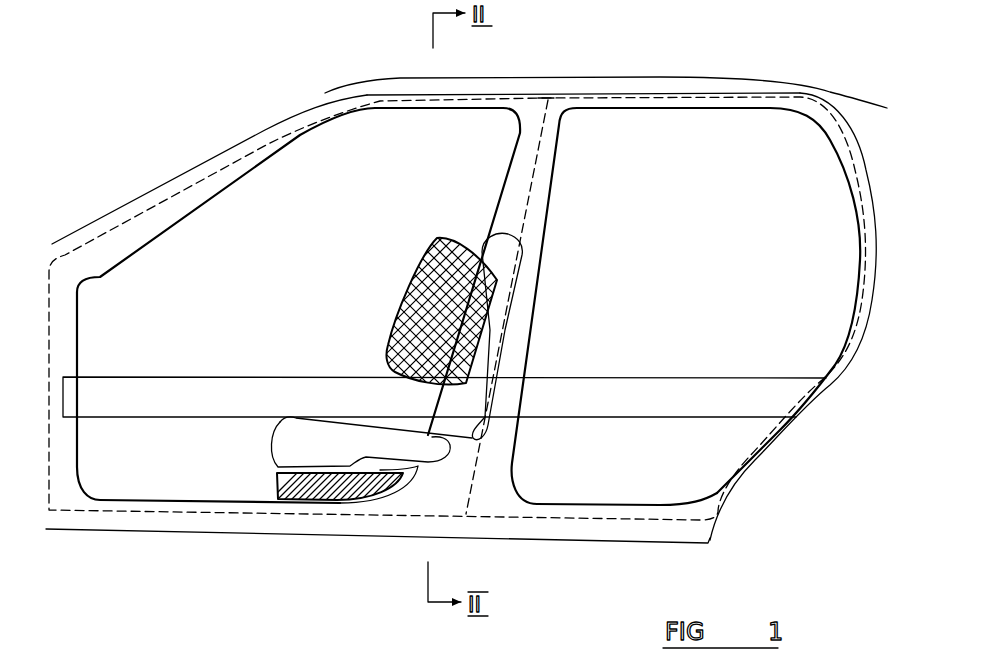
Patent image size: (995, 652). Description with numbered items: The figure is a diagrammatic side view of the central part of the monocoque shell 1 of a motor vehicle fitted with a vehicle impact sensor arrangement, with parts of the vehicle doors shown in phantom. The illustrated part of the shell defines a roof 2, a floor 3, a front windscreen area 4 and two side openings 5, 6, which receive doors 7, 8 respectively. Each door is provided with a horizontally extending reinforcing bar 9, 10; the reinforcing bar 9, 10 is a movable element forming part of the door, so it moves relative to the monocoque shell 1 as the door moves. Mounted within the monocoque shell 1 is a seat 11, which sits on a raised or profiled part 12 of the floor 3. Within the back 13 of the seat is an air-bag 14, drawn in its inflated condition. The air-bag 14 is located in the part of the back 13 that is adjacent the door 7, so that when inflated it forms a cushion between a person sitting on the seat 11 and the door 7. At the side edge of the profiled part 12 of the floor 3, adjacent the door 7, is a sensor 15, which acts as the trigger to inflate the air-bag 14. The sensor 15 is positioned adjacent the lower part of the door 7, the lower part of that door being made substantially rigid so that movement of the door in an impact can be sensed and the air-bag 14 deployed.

The monocoque shell 1 is at (736, 70).
The roof 2 is at (560, 77).
The floor 3 is at (487, 540).
The front windscreen area 4 is at (187, 150).
The side opening 5 is at (168, 470).
The side opening 6 is at (688, 478).
The door 7 is at (290, 128).
The door 8 is at (817, 117).
The reinforcing bar 9 is at (127, 400).
The reinforcing bar 10 is at (793, 413).
The seat 11 is at (343, 437).
The profiled part of the floor 12 is at (272, 492).
The back of the seat 13 is at (512, 258).
The air-bag 14 is at (427, 236).
The sensor 15 is at (313, 500).